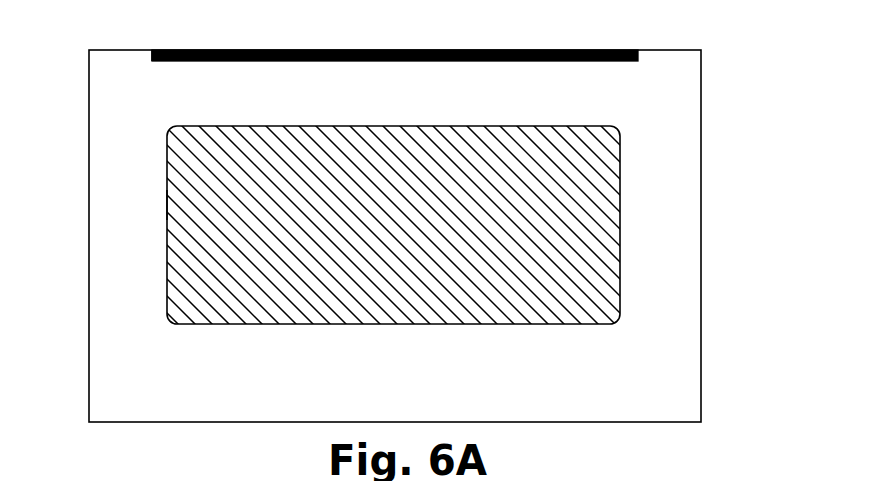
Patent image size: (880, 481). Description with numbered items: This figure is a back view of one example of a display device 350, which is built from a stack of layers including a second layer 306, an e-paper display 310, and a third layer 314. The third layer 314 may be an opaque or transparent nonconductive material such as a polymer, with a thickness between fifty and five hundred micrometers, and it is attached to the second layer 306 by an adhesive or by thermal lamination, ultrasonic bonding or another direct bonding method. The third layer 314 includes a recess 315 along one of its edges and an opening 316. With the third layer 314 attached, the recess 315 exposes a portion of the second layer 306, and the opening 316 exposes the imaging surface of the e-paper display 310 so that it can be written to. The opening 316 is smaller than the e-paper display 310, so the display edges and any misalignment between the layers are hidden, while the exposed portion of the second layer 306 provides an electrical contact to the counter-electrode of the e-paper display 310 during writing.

The second layer 306 is at (180, 50).
The e-paper display 310 is at (602, 180).
The third layer 314 is at (113, 107).
The recess 315 is at (160, 61).
The opening 316 is at (167, 205).
The display device 350 is at (723, 82).